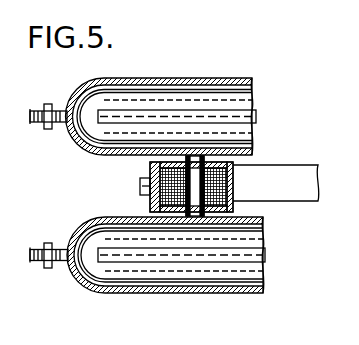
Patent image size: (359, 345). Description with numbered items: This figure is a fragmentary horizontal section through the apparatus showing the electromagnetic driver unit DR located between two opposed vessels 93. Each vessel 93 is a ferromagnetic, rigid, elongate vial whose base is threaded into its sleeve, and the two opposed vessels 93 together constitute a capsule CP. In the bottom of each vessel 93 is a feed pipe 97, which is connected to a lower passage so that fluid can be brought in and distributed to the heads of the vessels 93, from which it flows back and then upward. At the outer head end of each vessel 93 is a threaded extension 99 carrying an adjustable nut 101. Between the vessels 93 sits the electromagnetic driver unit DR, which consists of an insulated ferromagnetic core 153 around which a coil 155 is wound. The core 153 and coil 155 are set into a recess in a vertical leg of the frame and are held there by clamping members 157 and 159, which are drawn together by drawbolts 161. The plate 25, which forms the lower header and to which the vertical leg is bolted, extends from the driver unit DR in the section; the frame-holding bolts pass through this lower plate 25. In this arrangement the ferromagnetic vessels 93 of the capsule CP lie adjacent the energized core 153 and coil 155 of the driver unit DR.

The plate 25 is at (293, 200).
The vessel 93 is at (160, 78).
The feed pipe 97 is at (241, 115).
The threaded extension 99 is at (36, 111).
The adjustable nut 101 is at (48, 104).
The ferromagnetic core 153 is at (192, 160).
The coil 155 is at (150, 198).
The clamping member 157 is at (150, 166).
The clamping member 159 is at (233, 166).
The drawbolt 161 is at (140, 183).
The capsule CP is at (223, 77).
The electromagnetic driver unit DR is at (134, 194).